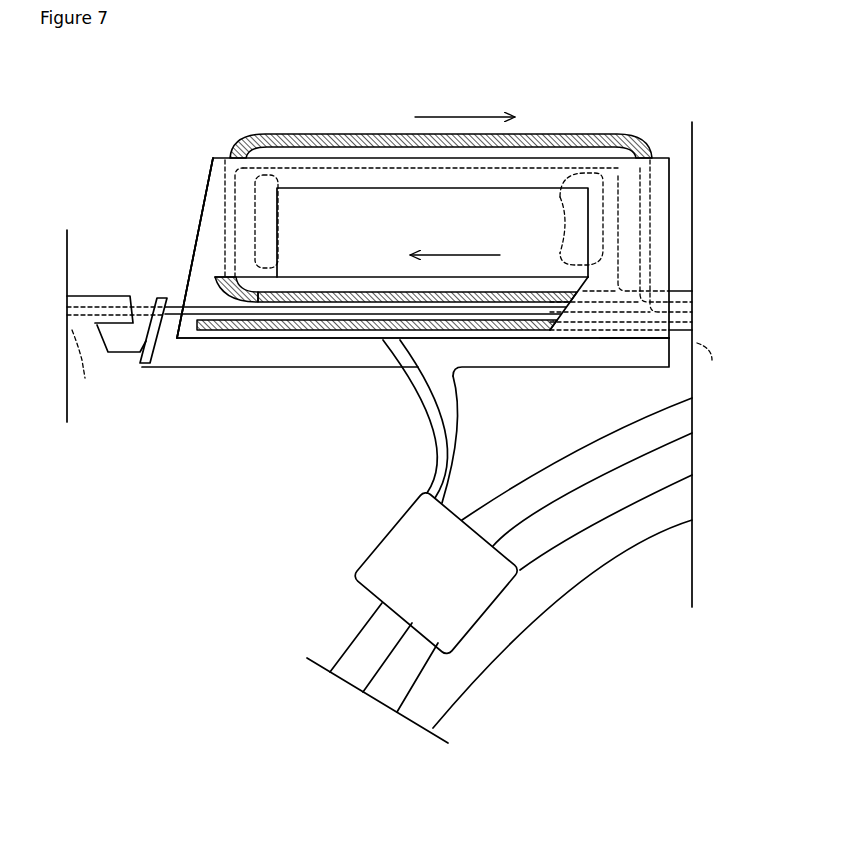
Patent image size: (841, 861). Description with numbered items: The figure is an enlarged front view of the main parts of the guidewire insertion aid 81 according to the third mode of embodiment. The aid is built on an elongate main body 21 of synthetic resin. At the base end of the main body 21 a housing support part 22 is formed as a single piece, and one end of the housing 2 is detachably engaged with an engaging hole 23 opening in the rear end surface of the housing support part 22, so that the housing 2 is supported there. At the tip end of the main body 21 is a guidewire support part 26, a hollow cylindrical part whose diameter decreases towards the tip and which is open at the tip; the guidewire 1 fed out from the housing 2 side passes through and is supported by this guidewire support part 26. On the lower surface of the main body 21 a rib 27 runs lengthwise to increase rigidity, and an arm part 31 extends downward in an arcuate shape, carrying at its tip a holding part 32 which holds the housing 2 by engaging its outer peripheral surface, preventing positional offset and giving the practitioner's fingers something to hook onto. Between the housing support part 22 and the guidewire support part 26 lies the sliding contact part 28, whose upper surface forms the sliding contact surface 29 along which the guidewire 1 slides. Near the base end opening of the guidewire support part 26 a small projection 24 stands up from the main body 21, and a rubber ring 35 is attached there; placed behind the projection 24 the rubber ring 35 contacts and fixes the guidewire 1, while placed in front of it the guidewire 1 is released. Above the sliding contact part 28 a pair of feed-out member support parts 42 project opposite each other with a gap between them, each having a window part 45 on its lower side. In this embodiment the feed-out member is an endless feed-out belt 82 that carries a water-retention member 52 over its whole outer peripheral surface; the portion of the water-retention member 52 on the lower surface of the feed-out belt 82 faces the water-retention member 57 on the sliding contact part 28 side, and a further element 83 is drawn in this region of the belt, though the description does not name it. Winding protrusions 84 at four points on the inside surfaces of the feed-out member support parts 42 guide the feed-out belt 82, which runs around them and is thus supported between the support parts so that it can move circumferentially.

The guidewire insertion aid 81 is at (145, 155).
The feed-out belt 82 is at (560, 132).
The window part 45 is at (360, 198).
The inner heat insulating member 83 is at (352, 286).
The water-retention member 52 is at (508, 293).
The sliding contact part 28 is at (281, 343).
The sliding contact surface 29 is at (378, 318).
The rib 27 is at (328, 352).
The main body 21 is at (247, 340).
The water-retention member 57 is at (478, 338).
The housing support part 22 is at (642, 342).
The engaging hole 23 is at (615, 339).
The winding protrusion 84 is at (283, 200).
The guidewire 1 is at (532, 291).
The housing 2 is at (688, 298).
The guidewire support part 26 is at (80, 295).
The feed-out member support part 42 is at (210, 236).
The projection 24 is at (150, 299).
The rubber ring 35 is at (137, 343).
The arm part 31 is at (433, 448).
The holding part 32 is at (463, 601).